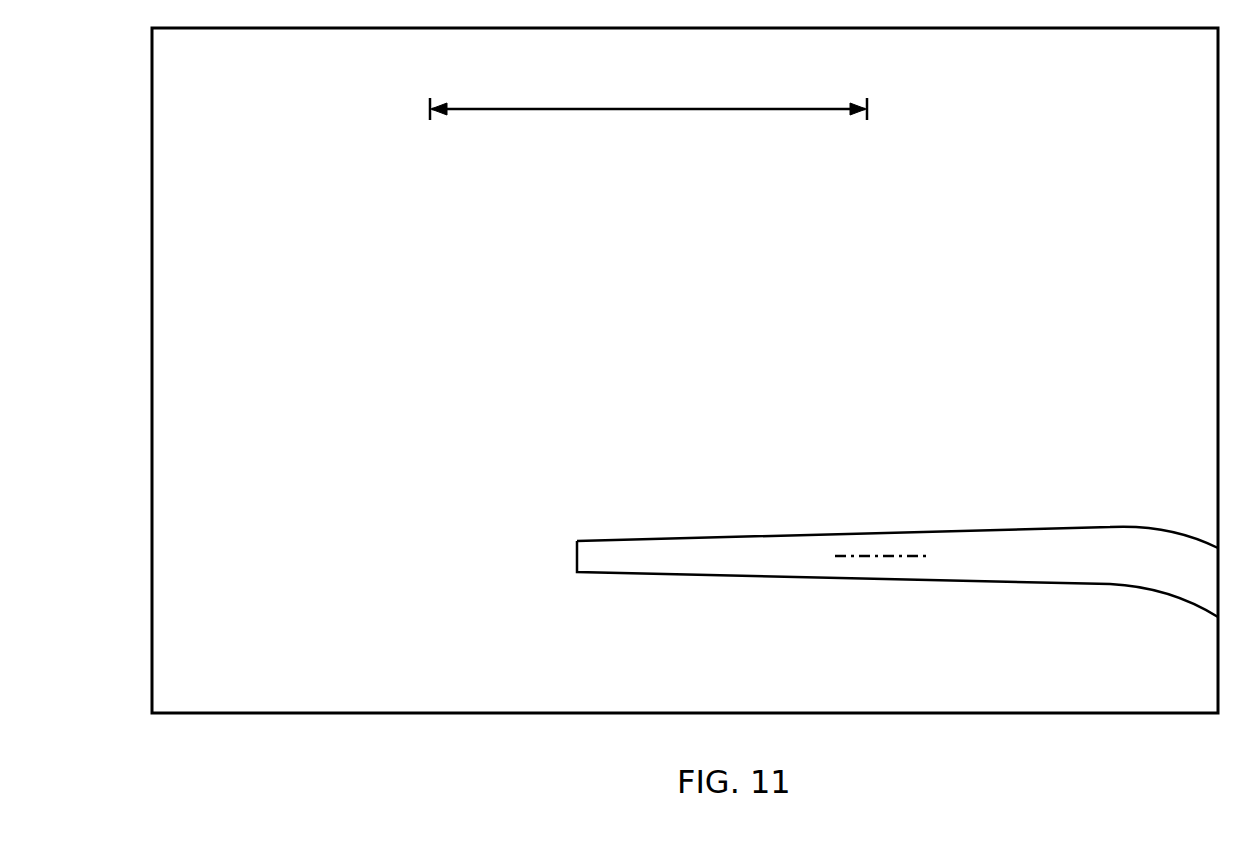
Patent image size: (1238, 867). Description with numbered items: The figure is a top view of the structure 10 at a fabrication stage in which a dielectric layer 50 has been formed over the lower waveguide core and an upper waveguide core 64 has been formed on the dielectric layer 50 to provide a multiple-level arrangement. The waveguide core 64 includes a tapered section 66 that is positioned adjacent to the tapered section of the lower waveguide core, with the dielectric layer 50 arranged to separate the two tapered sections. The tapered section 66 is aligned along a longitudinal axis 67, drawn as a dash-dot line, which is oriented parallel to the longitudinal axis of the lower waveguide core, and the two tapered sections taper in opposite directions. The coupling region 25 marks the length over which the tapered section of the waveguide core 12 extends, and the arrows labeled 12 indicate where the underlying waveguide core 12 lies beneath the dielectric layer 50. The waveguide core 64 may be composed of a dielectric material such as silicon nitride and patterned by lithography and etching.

The wind turbine rotor blade 10 is at (1110, 136).
The waveguide core 12 is at (740, 245).
The coupling region 25 is at (648, 98).
The dielectric layer 50 is at (235, 662).
The waveguide core 64 is at (725, 451).
The tapered section 66 is at (1000, 552).
The longitudinal axis 67 is at (895, 557).